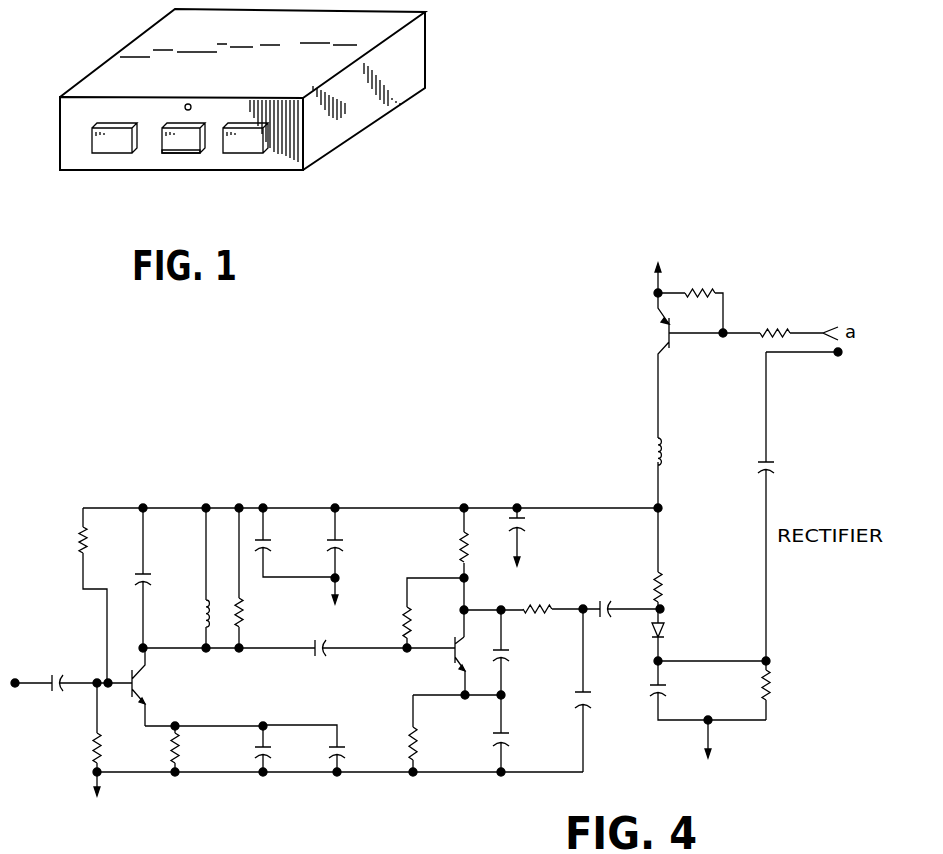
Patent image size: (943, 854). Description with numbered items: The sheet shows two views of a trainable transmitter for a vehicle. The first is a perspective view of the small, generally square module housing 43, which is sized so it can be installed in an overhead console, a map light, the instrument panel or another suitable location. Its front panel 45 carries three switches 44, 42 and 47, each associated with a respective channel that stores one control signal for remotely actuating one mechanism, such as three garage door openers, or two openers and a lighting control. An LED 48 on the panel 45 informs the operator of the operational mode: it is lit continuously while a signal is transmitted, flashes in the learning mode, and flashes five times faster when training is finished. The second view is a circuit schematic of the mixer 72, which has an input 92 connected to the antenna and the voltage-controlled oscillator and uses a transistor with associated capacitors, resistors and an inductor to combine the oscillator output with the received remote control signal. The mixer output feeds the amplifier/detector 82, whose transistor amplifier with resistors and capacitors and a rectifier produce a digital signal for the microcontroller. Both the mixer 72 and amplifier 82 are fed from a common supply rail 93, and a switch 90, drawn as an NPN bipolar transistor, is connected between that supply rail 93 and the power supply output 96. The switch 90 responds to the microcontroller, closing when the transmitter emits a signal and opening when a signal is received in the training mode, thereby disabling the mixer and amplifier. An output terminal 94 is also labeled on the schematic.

In FIG. 1, the module housing 43 is at (147, 28).
In FIG. 1, the LED 48 is at (181, 106).
In FIG. 1, the switch 44 is at (107, 143).
In FIG. 1, the switch 42 is at (168, 143).
In FIG. 1, the front panel 45 is at (190, 160).
In FIG. 1, the switch 47 is at (248, 142).
In FIG. 4, the mixer 72 is at (297, 618).
In FIG. 4, the supply rail 93 is at (293, 507).
In FIG. 4, the amplifier/detector 82 is at (580, 437).
In FIG. 4, the input 92 is at (17, 688).
In FIG. 4, the power supply output 96 is at (655, 270).
In FIG. 4, the switch 90 is at (660, 332).
In FIG. 4, the output terminal 94 is at (838, 354).